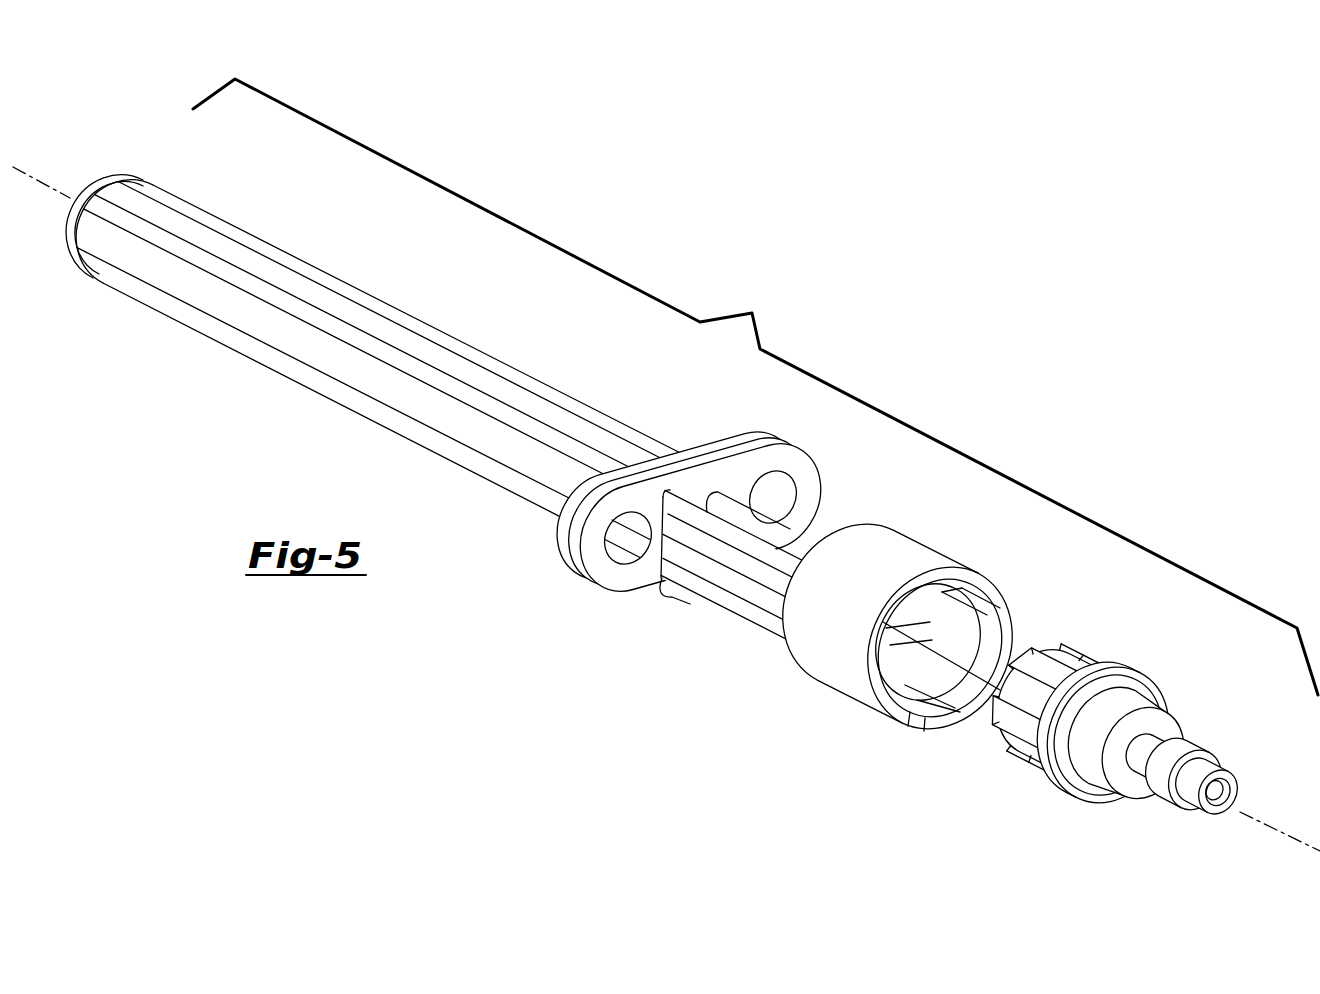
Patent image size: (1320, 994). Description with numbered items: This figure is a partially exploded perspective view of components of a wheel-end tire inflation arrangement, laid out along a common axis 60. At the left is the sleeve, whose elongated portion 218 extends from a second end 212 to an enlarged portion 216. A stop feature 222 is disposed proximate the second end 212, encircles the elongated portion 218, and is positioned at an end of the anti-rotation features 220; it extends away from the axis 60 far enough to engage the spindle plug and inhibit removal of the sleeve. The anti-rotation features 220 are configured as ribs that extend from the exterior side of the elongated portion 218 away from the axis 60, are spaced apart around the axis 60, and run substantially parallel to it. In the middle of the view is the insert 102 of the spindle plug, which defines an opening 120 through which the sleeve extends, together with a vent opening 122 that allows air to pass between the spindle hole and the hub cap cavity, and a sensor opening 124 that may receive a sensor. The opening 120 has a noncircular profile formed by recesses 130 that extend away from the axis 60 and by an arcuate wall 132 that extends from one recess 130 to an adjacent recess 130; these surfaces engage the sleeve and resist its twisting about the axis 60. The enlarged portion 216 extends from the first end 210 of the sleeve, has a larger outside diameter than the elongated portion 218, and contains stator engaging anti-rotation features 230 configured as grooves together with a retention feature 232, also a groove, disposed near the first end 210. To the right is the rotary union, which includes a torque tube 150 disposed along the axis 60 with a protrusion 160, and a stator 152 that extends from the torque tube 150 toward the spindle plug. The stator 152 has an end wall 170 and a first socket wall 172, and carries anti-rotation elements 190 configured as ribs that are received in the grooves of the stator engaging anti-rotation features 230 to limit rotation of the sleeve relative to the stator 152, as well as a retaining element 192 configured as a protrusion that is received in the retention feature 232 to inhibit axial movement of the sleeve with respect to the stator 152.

The axis 60 is at (37, 178).
The insert 102 is at (785, 462).
The opening 120 is at (648, 508).
The vent opening 122 is at (613, 586).
The sensor opening 124 is at (787, 500).
The recesses 130 is at (657, 497).
The arcuate wall 132 is at (697, 487).
The torque tube 150 is at (1215, 767).
The stator 152 is at (1099, 720).
The protrusion 160 is at (1195, 753).
The end wall 170 is at (1160, 723).
The first socket wall 172 is at (1090, 777).
The anti-rotation elements 190 is at (1042, 653).
The retaining element 192 is at (1132, 670).
The first end 210 is at (1013, 623).
The second end 212 is at (70, 237).
The enlarged portion 216 is at (887, 532).
The elongated portion 218 is at (327, 293).
The anti-rotation features 220 is at (233, 273).
The stop feature 222 is at (103, 175).
The stator engaging anti-rotation features 230 is at (997, 617).
The retention feature 232 is at (920, 710).